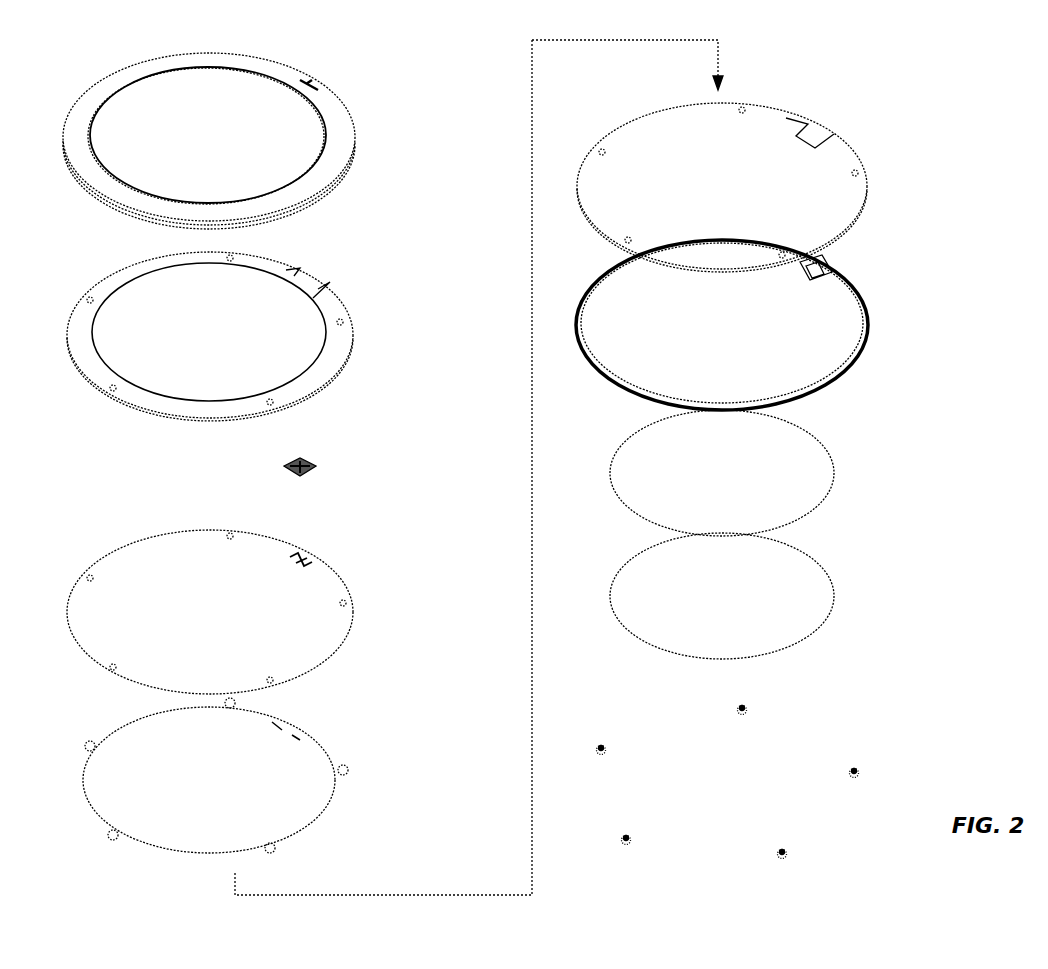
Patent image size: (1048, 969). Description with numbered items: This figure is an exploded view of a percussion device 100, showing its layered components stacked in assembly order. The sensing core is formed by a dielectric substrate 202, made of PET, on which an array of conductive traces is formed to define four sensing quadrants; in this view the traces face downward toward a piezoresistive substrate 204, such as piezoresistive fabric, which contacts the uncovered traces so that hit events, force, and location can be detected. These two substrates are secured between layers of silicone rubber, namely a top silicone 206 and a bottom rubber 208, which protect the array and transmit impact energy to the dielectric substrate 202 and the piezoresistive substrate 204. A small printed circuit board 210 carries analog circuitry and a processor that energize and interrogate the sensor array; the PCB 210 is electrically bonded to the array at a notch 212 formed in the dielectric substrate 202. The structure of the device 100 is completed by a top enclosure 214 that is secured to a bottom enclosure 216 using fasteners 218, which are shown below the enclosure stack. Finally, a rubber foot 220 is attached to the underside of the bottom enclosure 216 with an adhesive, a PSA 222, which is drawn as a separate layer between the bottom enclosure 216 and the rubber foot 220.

The percussion device 100 is at (924, 58).
The dielectric substrate 202 is at (333, 608).
The piezoresistive substrate 204 is at (294, 780).
The top silicone 206 is at (386, 302).
The bottom rubber 208 is at (825, 185).
The printed circuit board 210 is at (355, 465).
The notch 212 is at (337, 540).
The top enclosure 214 is at (386, 124).
The bottom enclosure 216 is at (835, 339).
The fasteners 218 is at (793, 822).
The rubber foot 220 is at (780, 608).
The PSA 222 is at (782, 503).